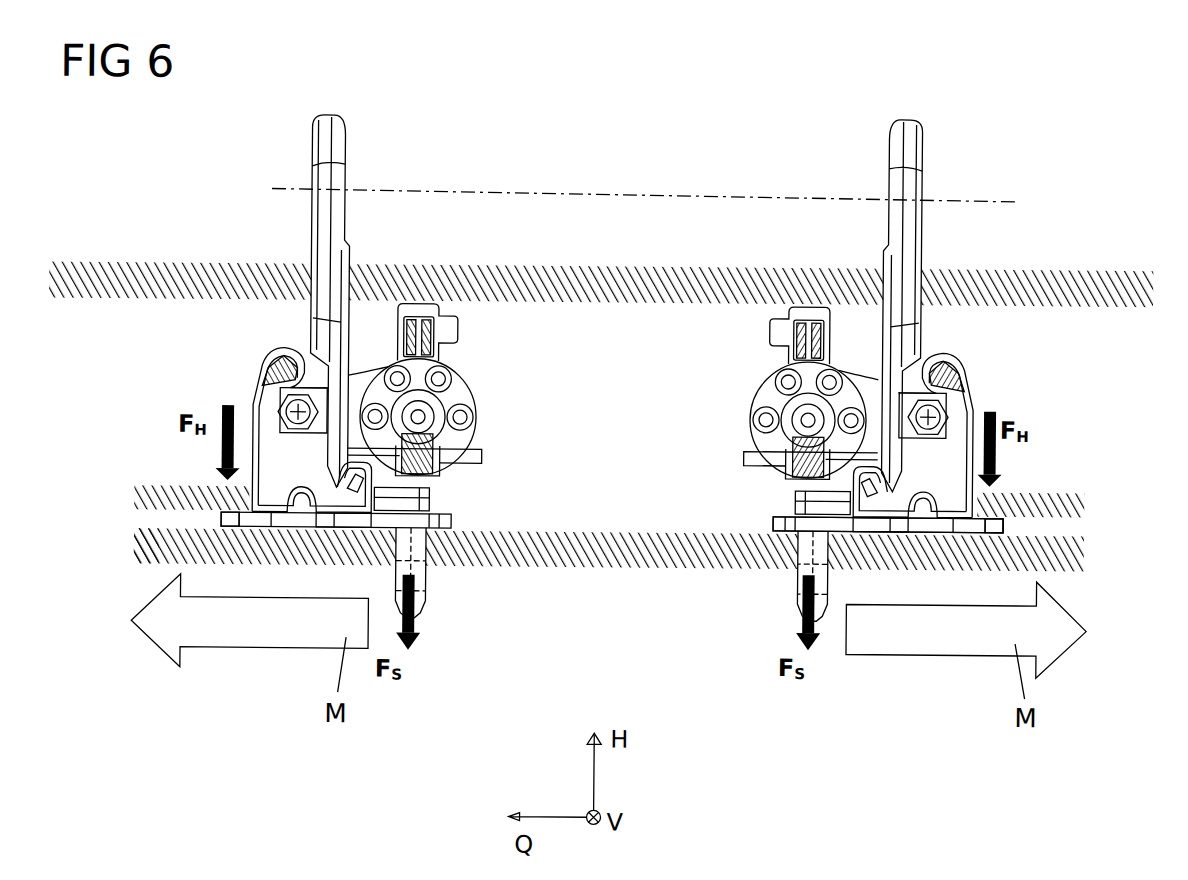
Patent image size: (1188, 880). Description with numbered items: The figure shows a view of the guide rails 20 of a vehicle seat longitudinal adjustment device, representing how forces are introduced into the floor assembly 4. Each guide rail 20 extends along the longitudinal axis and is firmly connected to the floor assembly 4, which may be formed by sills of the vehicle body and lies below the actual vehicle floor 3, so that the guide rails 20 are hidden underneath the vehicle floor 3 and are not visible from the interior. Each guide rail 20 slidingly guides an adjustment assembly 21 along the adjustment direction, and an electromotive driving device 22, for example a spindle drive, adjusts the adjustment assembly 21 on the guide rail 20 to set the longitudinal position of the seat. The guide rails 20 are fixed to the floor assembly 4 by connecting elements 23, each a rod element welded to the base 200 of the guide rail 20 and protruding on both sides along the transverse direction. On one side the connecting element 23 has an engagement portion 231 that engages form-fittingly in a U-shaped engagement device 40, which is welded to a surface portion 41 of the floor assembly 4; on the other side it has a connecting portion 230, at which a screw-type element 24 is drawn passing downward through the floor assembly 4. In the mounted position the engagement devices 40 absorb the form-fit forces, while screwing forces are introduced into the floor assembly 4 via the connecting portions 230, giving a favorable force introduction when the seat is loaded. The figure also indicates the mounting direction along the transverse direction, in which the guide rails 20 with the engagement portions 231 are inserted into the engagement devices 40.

The vehicle floor 3 is at (1083, 276).
The floor assembly 4 is at (1075, 549).
The engagement device 40 is at (155, 498).
The surface portion 41 is at (145, 542).
The guide rail 20 is at (272, 517).
The base 200 is at (335, 517).
The adjustment assembly 21 is at (333, 165).
The electromotive driving device 22 is at (470, 388).
The connecting element 23 is at (903, 540).
The connecting portion 230 is at (435, 524).
The engagement portion 231 is at (225, 519).
The fastening screw 24 is at (423, 582).